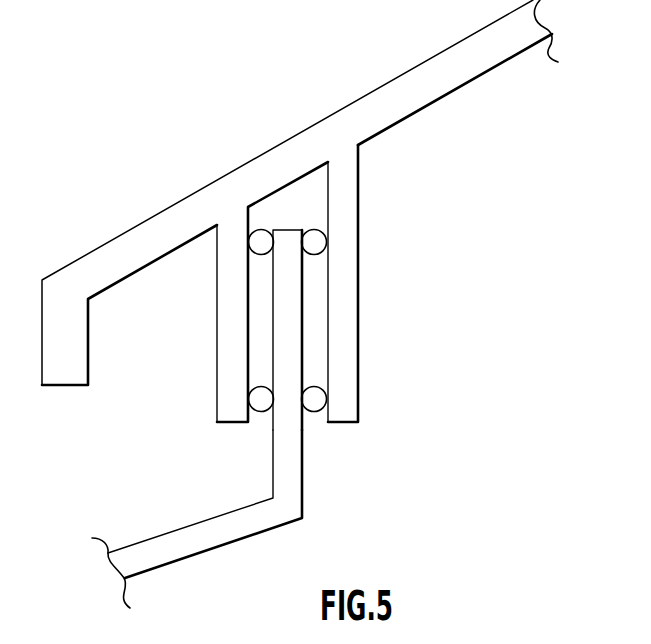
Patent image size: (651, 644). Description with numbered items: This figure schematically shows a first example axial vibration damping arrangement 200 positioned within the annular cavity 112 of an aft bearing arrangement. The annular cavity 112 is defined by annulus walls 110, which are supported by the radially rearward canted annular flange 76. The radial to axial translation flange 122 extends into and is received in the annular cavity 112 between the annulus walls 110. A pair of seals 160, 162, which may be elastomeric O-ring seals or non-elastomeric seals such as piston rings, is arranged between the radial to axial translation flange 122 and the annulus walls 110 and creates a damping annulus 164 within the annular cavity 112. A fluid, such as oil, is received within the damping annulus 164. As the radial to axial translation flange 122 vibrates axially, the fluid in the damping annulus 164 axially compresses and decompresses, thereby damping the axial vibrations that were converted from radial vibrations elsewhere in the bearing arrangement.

The radially rearward canted annular flange 76 is at (438, 73).
The annulus walls 110 is at (345, 181).
The annular cavity 112 is at (292, 207).
The radial to axial translation flange 122 is at (288, 467).
The seal 160 is at (318, 243).
The seal 162 is at (318, 399).
The damping annulus 164 is at (320, 323).
The axial vibration damping arrangement 200 is at (456, 245).